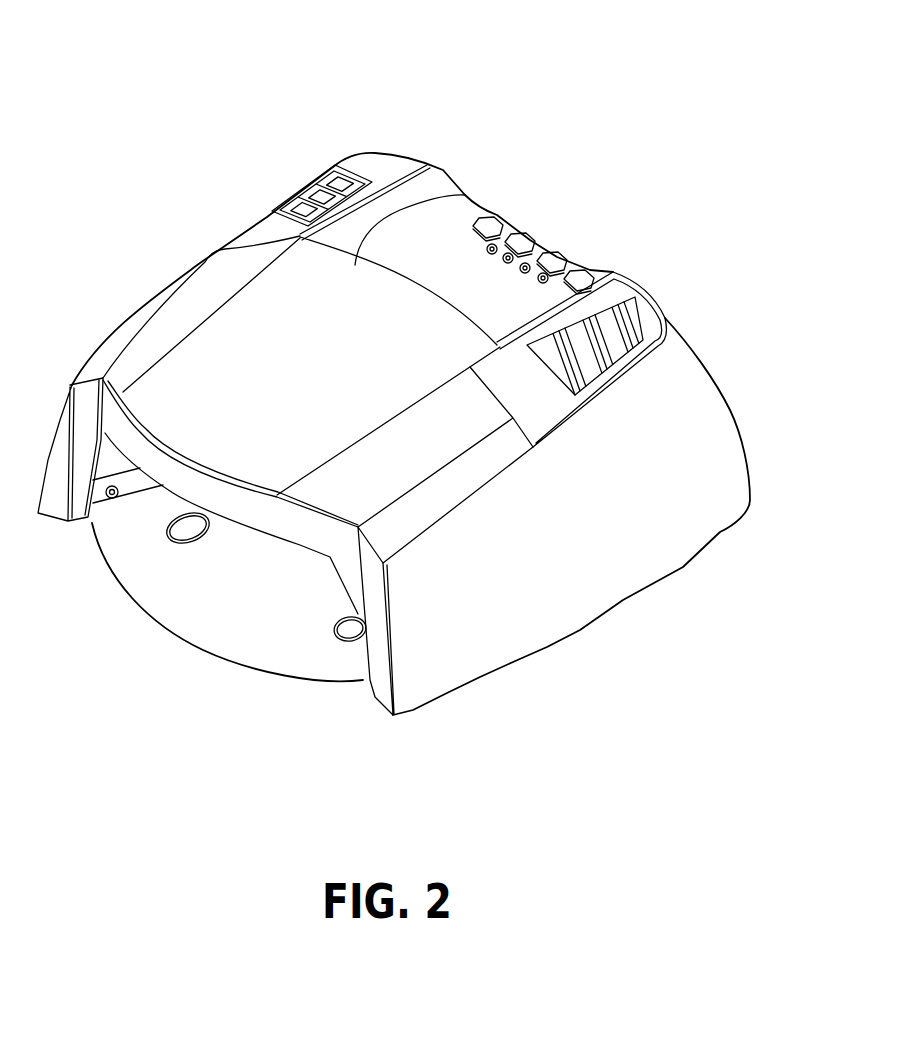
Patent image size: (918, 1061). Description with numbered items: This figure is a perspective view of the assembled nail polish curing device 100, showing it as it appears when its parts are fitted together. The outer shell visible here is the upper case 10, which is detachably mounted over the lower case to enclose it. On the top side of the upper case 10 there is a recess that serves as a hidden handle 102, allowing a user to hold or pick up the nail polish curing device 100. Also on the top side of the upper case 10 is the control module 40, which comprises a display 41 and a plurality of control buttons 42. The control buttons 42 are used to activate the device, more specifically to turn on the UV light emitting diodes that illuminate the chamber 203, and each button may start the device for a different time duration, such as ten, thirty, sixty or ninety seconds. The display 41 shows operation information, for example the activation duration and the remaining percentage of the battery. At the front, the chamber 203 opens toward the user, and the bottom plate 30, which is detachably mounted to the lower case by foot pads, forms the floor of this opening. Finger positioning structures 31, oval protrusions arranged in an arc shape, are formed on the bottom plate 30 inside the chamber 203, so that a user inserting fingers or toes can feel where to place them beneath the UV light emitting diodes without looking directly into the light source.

The nail polish curing device 100 is at (220, 96).
The upper case 10 is at (703, 427).
The hidden handle 102 is at (467, 208).
The control module 40 is at (503, 217).
The display 41 is at (528, 245).
The control buttons 42 is at (513, 293).
The bottom plate 30 is at (115, 540).
The finger positioning structures 31 is at (340, 626).
The chamber 203 is at (242, 593).